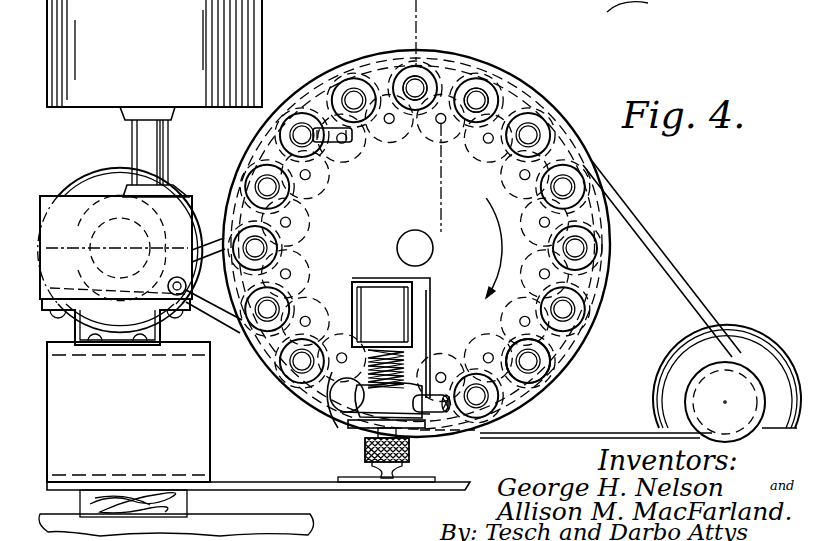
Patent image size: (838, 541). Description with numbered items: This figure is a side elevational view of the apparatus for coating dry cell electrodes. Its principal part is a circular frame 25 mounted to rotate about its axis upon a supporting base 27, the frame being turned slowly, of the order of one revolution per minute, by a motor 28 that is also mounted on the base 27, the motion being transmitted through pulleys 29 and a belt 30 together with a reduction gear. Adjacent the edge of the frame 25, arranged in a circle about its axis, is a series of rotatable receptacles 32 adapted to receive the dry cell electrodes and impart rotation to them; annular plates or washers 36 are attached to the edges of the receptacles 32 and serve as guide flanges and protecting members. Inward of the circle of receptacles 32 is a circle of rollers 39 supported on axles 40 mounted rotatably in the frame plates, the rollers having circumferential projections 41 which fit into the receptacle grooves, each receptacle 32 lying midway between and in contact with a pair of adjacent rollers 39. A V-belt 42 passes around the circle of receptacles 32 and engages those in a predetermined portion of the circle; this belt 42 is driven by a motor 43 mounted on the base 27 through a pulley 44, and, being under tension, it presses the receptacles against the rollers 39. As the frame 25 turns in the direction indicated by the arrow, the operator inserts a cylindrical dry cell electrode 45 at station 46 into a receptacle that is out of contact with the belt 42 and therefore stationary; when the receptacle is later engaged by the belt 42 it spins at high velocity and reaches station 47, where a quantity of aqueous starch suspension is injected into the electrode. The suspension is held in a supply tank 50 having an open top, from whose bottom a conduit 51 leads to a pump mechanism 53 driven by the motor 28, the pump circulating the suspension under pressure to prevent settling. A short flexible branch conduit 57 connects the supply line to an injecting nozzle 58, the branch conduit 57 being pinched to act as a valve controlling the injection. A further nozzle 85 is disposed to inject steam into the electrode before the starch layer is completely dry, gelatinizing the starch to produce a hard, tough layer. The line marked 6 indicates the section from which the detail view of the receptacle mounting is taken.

The section line 6 is at (442, 203).
The circular frame 25 is at (584, 357).
The supporting base 27 is at (343, 492).
The motor 28 is at (92, 176).
The pulleys 29 is at (98, 238).
The belt 30 is at (229, 332).
The receptacles 32 is at (416, 86).
The annular plates or washers 36 is at (478, 78).
The rollers 39 is at (531, 101).
The axles 40 is at (486, 144).
The circumferential projections 41 is at (393, 125).
The V-belt 42 is at (658, 253).
The motor 43 is at (734, 326).
The pulley 44 is at (698, 372).
The cylindrical dry cell electrode 45 is at (543, 359).
The station 46 is at (549, 385).
The station 47 is at (330, 401).
The supply tank 50 is at (262, 20).
The conduit 51 is at (168, 146).
The pump mechanism 53 is at (198, 214).
The branch conduit 57 is at (441, 386).
The injecting nozzle 58 is at (344, 384).
The nozzle 85 is at (339, 146).